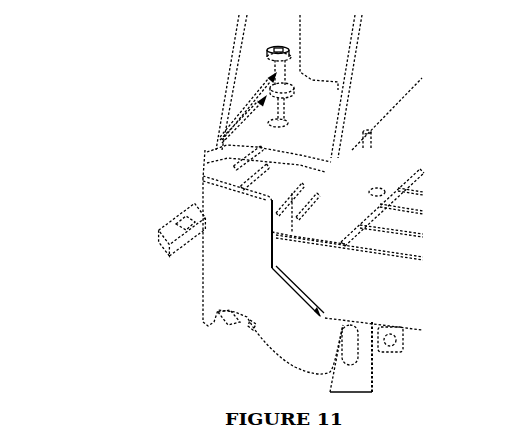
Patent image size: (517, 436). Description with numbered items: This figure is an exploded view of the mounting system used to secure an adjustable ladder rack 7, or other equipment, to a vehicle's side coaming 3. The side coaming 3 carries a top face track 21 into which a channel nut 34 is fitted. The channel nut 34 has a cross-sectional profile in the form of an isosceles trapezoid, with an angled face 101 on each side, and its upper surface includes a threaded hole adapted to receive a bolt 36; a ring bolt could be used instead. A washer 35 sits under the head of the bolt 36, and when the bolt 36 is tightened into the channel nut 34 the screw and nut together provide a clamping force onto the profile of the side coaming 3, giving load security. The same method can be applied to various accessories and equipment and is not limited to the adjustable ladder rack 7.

The side coaming 3 is at (312, 171).
The adjustable ladder rack 7 is at (222, 46).
The top face track 21 is at (205, 182).
The channel nut 34 is at (164, 260).
The washer 35 is at (218, 143).
The bolt 36 is at (218, 110).
The angled face 101 is at (150, 230).